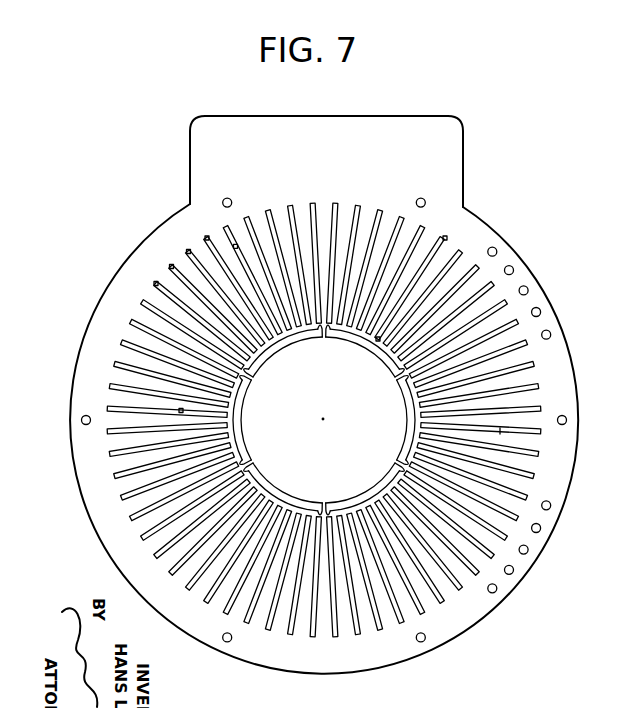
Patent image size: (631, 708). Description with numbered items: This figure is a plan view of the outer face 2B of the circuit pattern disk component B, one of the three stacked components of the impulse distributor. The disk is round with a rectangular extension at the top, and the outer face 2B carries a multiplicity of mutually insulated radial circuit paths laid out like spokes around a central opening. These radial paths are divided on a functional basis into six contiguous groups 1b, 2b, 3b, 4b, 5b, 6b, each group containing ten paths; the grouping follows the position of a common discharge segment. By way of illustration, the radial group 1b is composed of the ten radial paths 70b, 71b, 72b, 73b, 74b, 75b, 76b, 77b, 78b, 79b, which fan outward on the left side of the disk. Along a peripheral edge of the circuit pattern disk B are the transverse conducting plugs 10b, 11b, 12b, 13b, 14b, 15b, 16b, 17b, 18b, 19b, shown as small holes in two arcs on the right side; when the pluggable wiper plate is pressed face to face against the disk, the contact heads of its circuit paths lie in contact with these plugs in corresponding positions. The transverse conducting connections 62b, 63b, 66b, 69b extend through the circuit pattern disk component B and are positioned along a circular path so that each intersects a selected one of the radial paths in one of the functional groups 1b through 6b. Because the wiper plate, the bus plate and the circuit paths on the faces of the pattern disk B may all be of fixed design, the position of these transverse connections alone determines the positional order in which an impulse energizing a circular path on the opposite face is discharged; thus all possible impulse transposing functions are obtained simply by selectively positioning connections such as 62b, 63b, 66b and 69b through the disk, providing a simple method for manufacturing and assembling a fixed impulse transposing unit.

The circuit pattern disk component B is at (392, 112).
The outer face of the circuit pattern disk component 2B is at (440, 142).
The radial group 1b is at (249, 375).
The radial group 2b is at (324, 334).
The radial group 3b is at (399, 378).
The radial group 4b is at (399, 462).
The radial group 5b is at (323, 504).
The radial group 6b is at (251, 462).
The transverse conducting plug 10b is at (497, 252).
The transverse conducting plug 11b is at (514, 269).
The transverse conducting plug 12b is at (528, 290).
The transverse conducting plug 13b is at (540, 312).
The transverse conducting plug 14b is at (550, 334).
The transverse conducting plug 15b is at (551, 507).
The transverse conducting plug 16b is at (541, 530).
The transverse conducting plug 17b is at (529, 552).
The transverse conducting plug 18b is at (515, 572).
The transverse conducting plug 19b is at (497, 590).
The transverse conducting connection 62b is at (234, 246).
The transverse conducting connection 63b is at (505, 433).
The transverse conducting connection 66b is at (183, 410).
The transverse conducting connection 69b is at (378, 340).
The radial path 70b is at (107, 407).
The radial path 71b is at (110, 386).
The radial path 72b is at (114, 364).
The radial path 73b is at (121, 342).
The radial path 74b is at (131, 321).
The radial path 75b is at (142, 302).
The radial path 76b is at (155, 283).
The radial path 77b is at (170, 266).
The radial path 78b is at (188, 250).
The radial path 79b is at (206, 237).